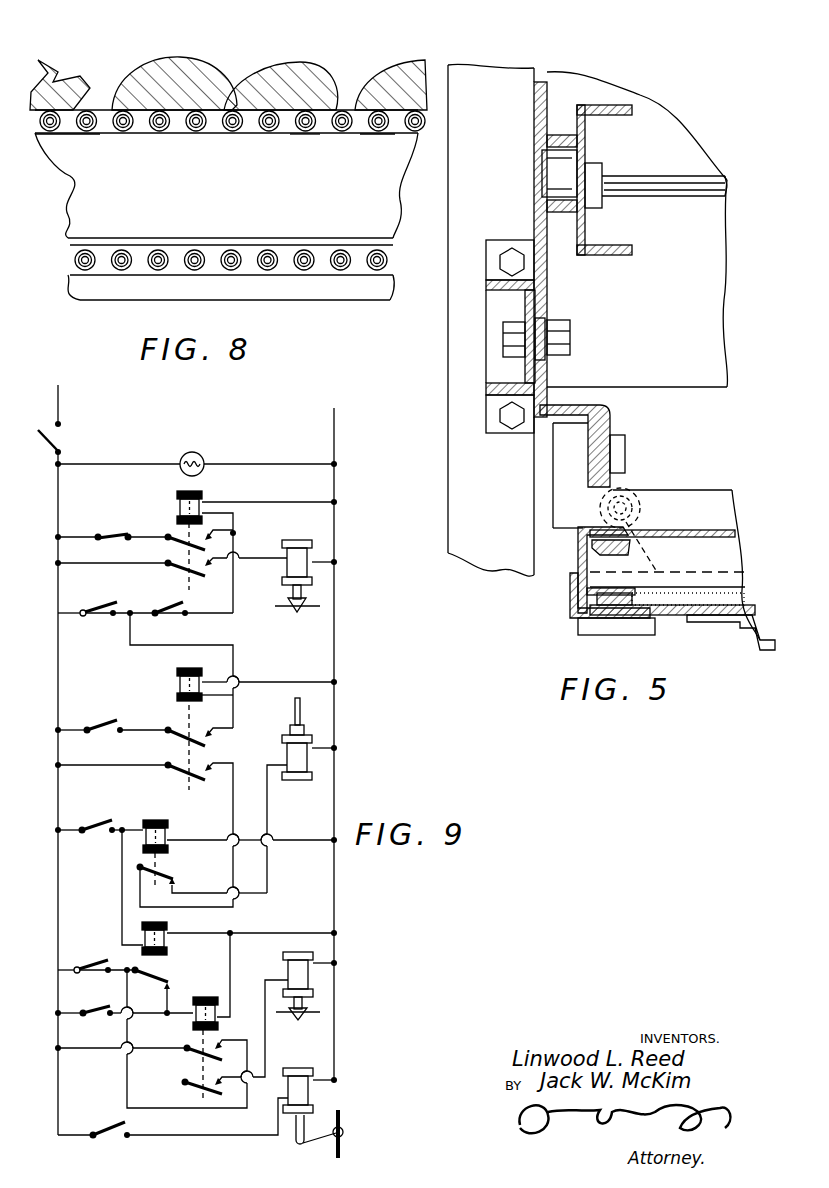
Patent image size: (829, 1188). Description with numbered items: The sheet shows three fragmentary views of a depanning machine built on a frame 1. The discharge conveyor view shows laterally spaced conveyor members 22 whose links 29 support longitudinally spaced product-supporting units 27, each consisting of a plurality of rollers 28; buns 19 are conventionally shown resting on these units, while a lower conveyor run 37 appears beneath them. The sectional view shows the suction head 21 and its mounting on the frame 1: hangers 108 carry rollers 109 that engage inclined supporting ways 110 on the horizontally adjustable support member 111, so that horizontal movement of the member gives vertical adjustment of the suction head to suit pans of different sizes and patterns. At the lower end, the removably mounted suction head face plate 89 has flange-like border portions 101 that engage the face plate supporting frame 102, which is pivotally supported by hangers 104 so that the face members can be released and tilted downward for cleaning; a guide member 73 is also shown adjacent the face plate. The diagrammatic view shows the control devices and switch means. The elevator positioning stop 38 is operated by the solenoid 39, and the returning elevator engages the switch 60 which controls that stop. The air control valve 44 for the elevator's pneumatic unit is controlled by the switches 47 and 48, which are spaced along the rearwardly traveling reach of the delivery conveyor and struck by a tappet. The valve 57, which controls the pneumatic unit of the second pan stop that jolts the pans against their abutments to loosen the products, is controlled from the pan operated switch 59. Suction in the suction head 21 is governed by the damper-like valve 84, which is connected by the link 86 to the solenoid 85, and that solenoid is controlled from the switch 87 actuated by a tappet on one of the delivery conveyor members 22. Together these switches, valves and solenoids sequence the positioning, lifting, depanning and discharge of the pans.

In FIG. 5, the frame 1 is at (463, 456).
In FIG. 8, the buns 19 is at (173, 66).
In FIG. 5, the suction head 21 is at (583, 580).
In FIG. 8, the conveyor members 22 is at (212, 134).
In FIG. 8, the product-supporting units 27 is at (376, 135).
In FIG. 8, the rollers 28 is at (340, 135).
In FIG. 8, the links 29 is at (136, 135).
In FIG. 8, the lower chain run 37 is at (97, 294).
In FIG. 9, the elevator positioning stop 38 is at (301, 711).
In FIG. 9, the solenoid 39 is at (304, 763).
In FIG. 9, the air control valve 44 is at (296, 552).
In FIG. 9, the switch 47 is at (168, 612).
In FIG. 9, the switch 48 is at (110, 534).
In FIG. 9, the valve 57 is at (301, 972).
In FIG. 9, the pan operated switch 59 is at (88, 964).
In FIG. 9, the switch 60 is at (103, 728).
In FIG. 5, the guide rail 73 is at (676, 546).
In FIG. 9, the damper-like valve 84 is at (346, 1146).
In FIG. 9, the solenoid 85 is at (304, 1090).
In FIG. 9, the link 86 is at (296, 1134).
In FIG. 9, the switch 87 is at (97, 1127).
In FIG. 5, the suction head face plate 89 is at (718, 612).
In FIG. 5, the flange-like border portions 101 is at (630, 604).
In FIG. 5, the face plate supporting frame 102 is at (574, 610).
In FIG. 5, the hangers 104 is at (596, 515).
In FIG. 5, the hangers 108 is at (548, 291).
In FIG. 5, the rollers 109 is at (556, 174).
In FIG. 5, the inclined supporting ways 110 is at (578, 141).
In FIG. 5, the horizontally adjustable support member 111 is at (632, 250).